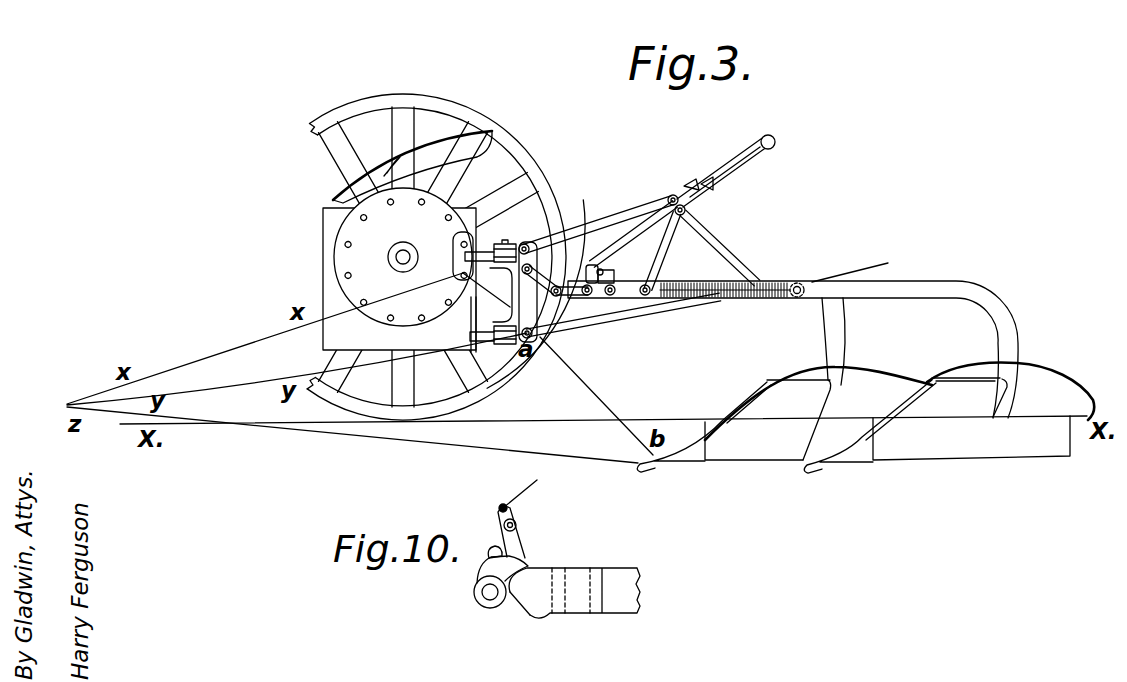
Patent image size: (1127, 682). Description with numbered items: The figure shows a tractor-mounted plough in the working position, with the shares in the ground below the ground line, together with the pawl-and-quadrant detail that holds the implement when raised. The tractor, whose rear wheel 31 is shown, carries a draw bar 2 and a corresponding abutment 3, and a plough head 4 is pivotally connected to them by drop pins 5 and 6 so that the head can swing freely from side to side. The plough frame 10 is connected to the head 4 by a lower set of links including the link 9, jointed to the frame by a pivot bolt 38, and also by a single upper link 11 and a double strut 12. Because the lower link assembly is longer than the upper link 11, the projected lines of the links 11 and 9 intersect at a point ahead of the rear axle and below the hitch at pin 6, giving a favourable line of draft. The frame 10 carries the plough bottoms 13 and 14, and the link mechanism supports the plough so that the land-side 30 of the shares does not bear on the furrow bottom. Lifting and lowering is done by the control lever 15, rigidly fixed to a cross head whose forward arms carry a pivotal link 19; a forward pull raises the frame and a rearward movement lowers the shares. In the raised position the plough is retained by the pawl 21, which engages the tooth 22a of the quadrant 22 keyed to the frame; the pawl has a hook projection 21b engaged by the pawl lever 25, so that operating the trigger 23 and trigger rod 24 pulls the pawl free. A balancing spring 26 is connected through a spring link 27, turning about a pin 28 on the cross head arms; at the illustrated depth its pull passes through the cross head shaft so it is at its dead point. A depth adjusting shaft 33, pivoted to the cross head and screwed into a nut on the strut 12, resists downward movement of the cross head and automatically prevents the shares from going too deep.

In FIG. 3, the draw bar 2 is at (496, 345).
In FIG. 3, the abutment 3 is at (488, 243).
In FIG. 3, the plough head 4 is at (519, 292).
In FIG. 3, the drop pin 5 is at (510, 240).
In FIG. 3, the drop pin 6 is at (531, 342).
In FIG. 3, the lower link 9 is at (672, 308).
In FIG. 3, the plough frame 10 is at (905, 288).
In FIG. 10, the plough frame 10 is at (617, 603).
In FIG. 3, the single link 11 is at (600, 232).
In FIG. 3, the double strut 12 is at (733, 263).
In FIG. 3, the plough bottom 13 is at (686, 460).
In FIG. 3, the plough bottom 14 is at (842, 460).
In FIG. 3, the control lever 15 is at (753, 158).
In FIG. 3, the pivotal link 19 is at (548, 322).
In FIG. 3, the pawl 21 is at (590, 265).
In FIG. 10, the pawl 21 is at (500, 568).
In FIG. 10, the hook projection 21b is at (492, 548).
In FIG. 10, the toothed sector or quadrant 22 is at (562, 613).
In FIG. 10, the tooth or notch 22a is at (517, 603).
In FIG. 3, the trigger 23 is at (757, 141).
In FIG. 3, the trigger rod 24 is at (706, 186).
In FIG. 10, the trigger rod 24 is at (510, 508).
In FIG. 10, the pawl lever 25 is at (520, 545).
In FIG. 3, the spring 26 is at (805, 283).
In FIG. 3, the spring link 27 is at (627, 300).
In FIG. 10, the pin 28 is at (488, 598).
In FIG. 3, the land-side 30 is at (887, 438).
In FIG. 3, the rear wheel 31 is at (476, 122).
In FIG. 3, the depth adjusting shaft 33 is at (668, 251).
In FIG. 3, the pivot bolt 38 is at (754, 299).